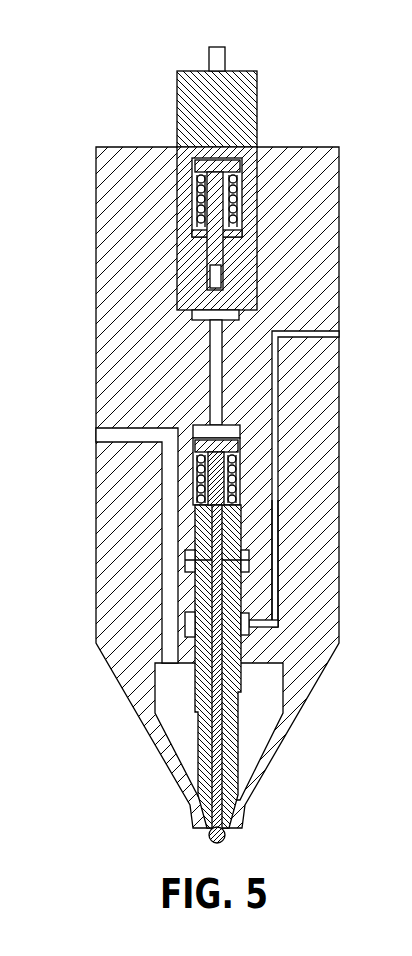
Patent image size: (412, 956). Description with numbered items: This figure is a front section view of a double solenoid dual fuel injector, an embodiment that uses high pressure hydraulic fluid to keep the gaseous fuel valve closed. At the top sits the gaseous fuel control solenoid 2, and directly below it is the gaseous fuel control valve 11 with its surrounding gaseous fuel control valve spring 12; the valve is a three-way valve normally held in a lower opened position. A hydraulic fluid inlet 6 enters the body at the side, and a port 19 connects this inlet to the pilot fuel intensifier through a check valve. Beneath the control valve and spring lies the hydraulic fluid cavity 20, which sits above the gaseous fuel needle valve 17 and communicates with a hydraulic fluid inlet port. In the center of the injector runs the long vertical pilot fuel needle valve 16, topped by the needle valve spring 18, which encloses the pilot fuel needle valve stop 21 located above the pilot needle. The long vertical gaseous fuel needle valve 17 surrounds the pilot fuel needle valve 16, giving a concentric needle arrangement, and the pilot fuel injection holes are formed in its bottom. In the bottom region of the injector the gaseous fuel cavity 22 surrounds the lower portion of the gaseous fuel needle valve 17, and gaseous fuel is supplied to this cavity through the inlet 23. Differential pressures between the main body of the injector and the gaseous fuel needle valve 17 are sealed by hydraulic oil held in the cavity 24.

The gaseous fuel control solenoid 2 is at (243, 105).
The gaseous fuel control valve 11 is at (223, 158).
The gaseous fuel control valve spring 12 is at (240, 193).
The hydraulic fluid inlet 6 is at (340, 332).
The port 19 is at (275, 515).
The hydraulic fluid cavity 20 is at (245, 430).
The needle valve spring 18 is at (247, 473).
The pilot fuel needle valve stop 21 is at (195, 503).
The pilot fuel needle valve 16 is at (195, 577).
The gaseous fuel needle valve 17 is at (195, 643).
The inlet 23 is at (98, 435).
The cavity 24 is at (257, 627).
The gaseous fuel cavity 22 is at (257, 728).